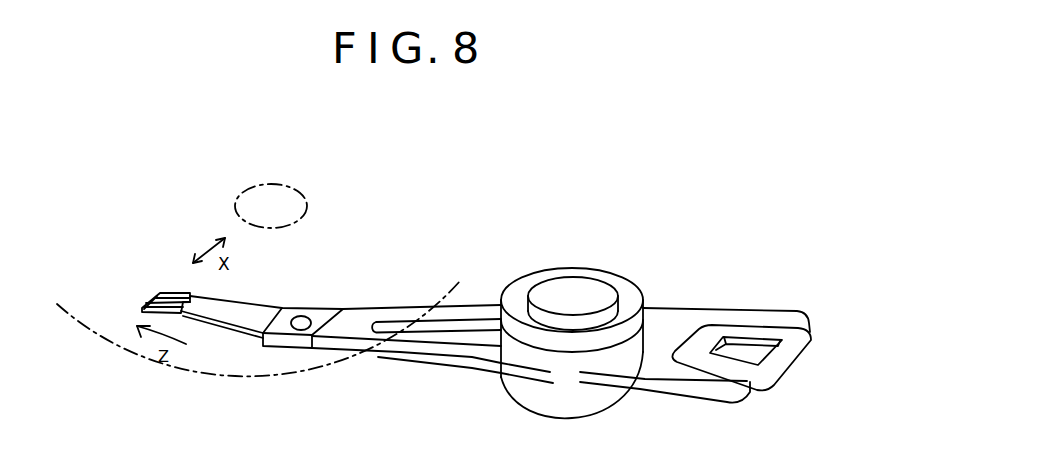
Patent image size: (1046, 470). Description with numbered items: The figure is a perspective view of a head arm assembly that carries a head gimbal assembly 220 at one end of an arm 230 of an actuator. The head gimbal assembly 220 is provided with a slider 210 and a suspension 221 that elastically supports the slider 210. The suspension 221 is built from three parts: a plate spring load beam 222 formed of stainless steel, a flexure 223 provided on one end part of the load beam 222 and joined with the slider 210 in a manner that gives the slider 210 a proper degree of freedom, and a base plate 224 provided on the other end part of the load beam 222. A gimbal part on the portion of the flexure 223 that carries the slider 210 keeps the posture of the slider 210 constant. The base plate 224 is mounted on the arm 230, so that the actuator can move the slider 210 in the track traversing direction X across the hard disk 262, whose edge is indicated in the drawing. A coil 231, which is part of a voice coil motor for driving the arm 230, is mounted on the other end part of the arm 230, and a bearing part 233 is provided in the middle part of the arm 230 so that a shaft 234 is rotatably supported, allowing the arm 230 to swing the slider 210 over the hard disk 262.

The slider 210 is at (165, 290).
The head gimbal assembly 220 is at (251, 345).
The suspension 221 is at (249, 304).
The load beam 222 is at (267, 315).
The flexure 223 is at (148, 300).
The base plate 224 is at (330, 310).
The arm 230 is at (400, 356).
The coil 231 is at (795, 369).
The bearing part 233 is at (520, 288).
The shaft 234 is at (583, 290).
The hard disk 262 is at (178, 373).